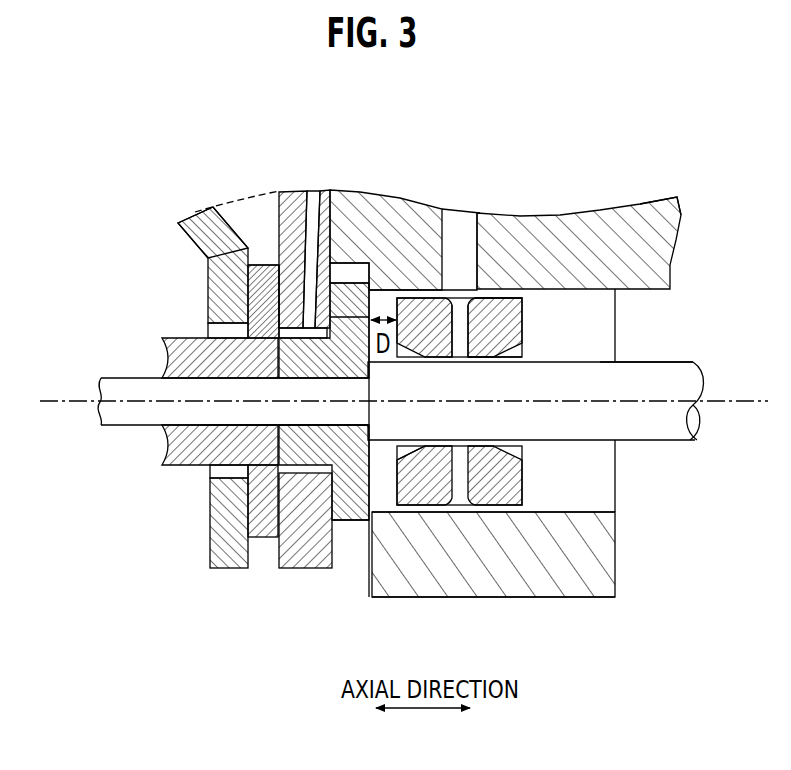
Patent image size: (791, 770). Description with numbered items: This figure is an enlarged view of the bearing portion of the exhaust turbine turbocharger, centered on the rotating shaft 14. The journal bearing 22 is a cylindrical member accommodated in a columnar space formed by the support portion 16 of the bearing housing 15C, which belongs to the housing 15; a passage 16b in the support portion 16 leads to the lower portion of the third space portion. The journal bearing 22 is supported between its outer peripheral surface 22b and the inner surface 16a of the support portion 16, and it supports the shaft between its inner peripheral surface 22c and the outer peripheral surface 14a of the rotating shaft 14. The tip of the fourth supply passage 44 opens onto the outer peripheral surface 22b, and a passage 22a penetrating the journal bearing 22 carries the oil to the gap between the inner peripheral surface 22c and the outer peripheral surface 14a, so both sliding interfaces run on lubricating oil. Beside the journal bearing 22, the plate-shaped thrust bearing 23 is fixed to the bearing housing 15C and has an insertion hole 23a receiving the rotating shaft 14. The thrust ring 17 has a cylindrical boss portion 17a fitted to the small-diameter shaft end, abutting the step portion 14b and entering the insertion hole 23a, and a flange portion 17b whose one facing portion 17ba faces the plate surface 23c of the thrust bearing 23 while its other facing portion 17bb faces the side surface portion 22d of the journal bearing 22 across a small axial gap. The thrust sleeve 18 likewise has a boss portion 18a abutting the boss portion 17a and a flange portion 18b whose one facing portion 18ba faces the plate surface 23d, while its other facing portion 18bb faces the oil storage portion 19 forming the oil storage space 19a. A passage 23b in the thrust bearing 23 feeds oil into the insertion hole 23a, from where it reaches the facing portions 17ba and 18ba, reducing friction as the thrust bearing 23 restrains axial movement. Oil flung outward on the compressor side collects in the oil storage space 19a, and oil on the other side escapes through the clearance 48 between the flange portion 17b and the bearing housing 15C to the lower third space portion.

The rotating shaft 14 is at (692, 355).
The outer peripheral surface of the rotating shaft 14a is at (660, 362).
The step portion 14b is at (360, 428).
The housing 15 is at (547, 230).
The bearing housing 15C is at (662, 197).
The support portion 16 is at (600, 548).
The inner surface of the support portion 16a is at (580, 296).
The passage 16b is at (617, 583).
The thrust ring 17 is at (320, 452).
The boss portion of the thrust ring 17a is at (300, 452).
The flange portion of the thrust ring 17b is at (350, 522).
The one facing portion of the thrust ring flange 17ba is at (337, 250).
The other facing portion of the thrust ring flange 17bb is at (372, 478).
The thrust sleeve 18 is at (193, 465).
The boss portion of the thrust sleeve 18a is at (175, 457).
The flange portion of the thrust sleeve 18b is at (260, 540).
The one facing portion of the thrust sleeve flange 18ba is at (264, 265).
The other facing portion of the thrust sleeve flange 18bb is at (262, 322).
The oil storage portion 19 is at (210, 288).
The oil storage space 19a is at (227, 215).
The journal bearing 22 is at (508, 327).
The passage of the journal bearing 22a is at (460, 335).
The outer peripheral surface of the journal bearing 22b is at (507, 297).
The inner peripheral surface of the journal bearing 22c is at (483, 357).
The side surface portion of the journal bearing 22d is at (393, 477).
The thrust bearing 23 is at (292, 235).
The insertion hole 23a is at (323, 340).
The passage of the thrust bearing 23b is at (313, 230).
The plate surface on the journal bearing side 23c is at (378, 268).
The plate surface on the compressor side 23d is at (297, 272).
The fourth supply passage 44 is at (465, 230).
The clearance 48 is at (370, 245).